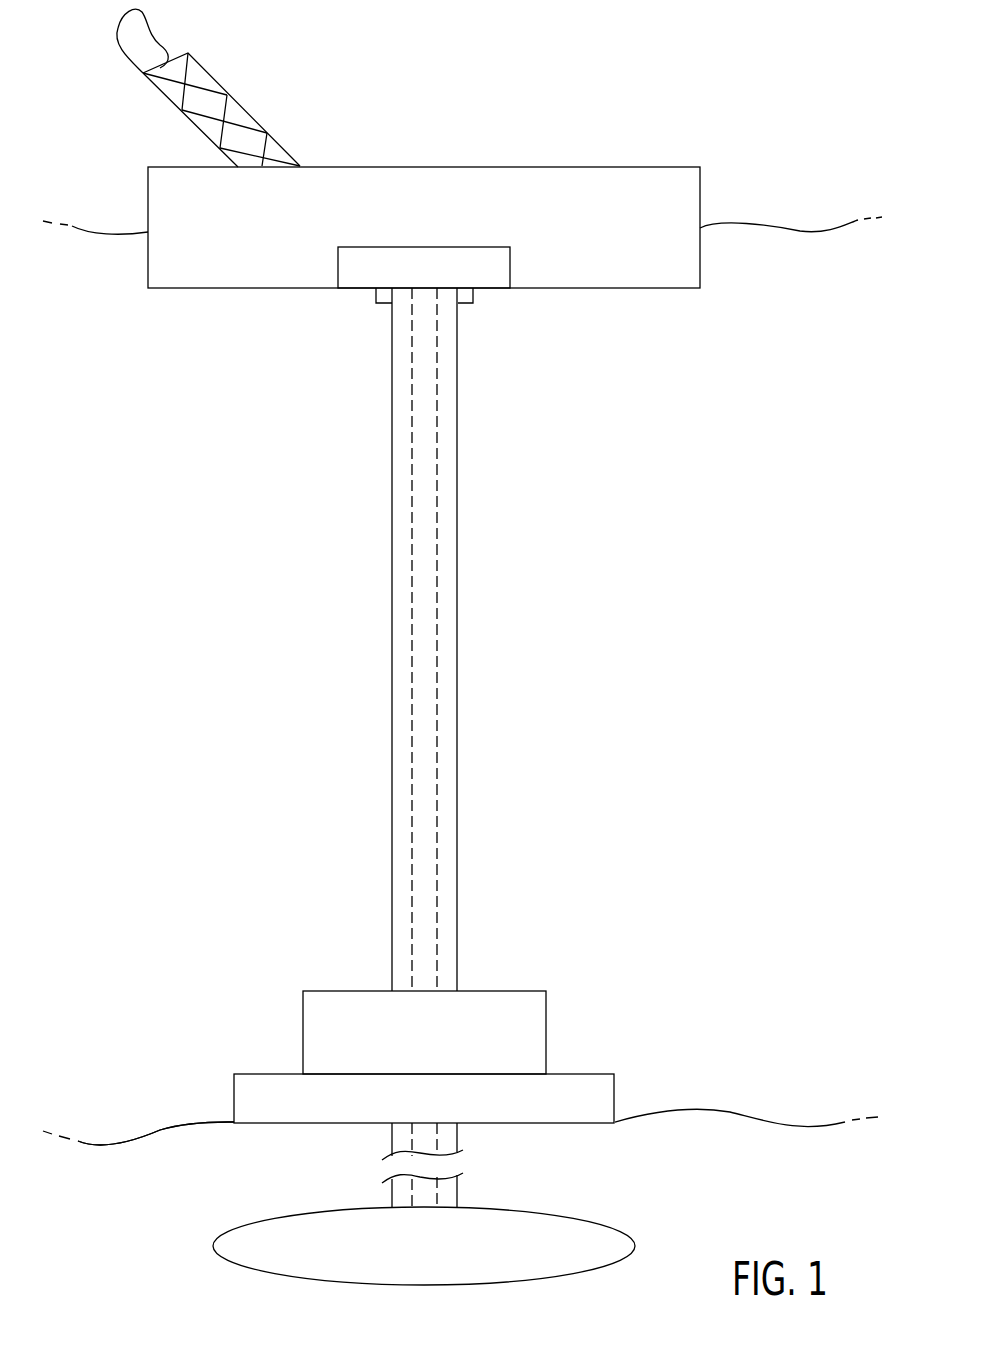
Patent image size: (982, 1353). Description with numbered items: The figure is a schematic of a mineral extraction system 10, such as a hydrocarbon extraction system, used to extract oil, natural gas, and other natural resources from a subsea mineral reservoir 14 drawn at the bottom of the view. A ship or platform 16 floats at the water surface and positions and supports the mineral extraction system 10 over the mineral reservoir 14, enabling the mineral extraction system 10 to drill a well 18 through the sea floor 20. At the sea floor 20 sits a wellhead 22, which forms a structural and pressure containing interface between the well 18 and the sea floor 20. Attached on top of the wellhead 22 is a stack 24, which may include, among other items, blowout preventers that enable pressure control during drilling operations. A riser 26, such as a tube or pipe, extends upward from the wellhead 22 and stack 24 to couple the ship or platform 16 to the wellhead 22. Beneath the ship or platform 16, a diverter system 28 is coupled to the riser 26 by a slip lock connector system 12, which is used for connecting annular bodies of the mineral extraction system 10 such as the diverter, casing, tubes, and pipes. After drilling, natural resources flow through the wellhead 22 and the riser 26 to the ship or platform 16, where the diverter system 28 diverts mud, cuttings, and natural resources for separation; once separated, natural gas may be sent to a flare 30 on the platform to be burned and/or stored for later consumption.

The mineral extraction system 10 is at (680, 731).
The slip lock connector system 12 is at (476, 303).
The mineral reservoir 14 is at (628, 1232).
The ship or platform 16 is at (700, 253).
The well 18 is at (603, 1147).
The sea floor 20 is at (155, 1138).
The wellhead 22 is at (614, 1097).
The stack 24 is at (546, 1030).
The riser 26 is at (457, 901).
The diverter system 28 is at (510, 266).
The flare 30 is at (247, 110).